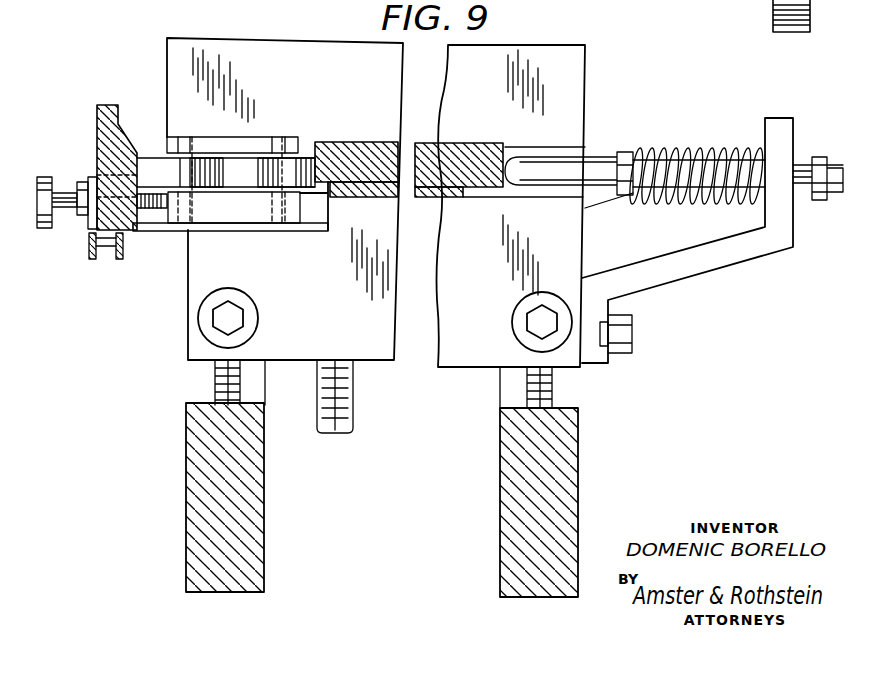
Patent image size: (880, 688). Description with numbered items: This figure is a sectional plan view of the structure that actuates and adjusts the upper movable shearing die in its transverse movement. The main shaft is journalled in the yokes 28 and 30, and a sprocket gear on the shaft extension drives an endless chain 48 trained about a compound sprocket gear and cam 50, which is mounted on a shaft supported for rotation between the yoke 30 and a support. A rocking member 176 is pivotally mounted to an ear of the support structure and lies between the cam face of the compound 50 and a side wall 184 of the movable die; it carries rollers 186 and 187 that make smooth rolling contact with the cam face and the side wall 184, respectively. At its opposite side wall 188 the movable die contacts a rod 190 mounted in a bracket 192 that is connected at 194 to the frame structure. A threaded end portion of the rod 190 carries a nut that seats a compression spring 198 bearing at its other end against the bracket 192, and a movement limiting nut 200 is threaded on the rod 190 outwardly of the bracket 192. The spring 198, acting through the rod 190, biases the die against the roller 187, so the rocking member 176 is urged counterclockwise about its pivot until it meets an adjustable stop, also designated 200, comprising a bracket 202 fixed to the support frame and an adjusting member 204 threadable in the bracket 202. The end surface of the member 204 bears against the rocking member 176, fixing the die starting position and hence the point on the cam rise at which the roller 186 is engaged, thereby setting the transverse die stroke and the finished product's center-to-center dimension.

The yoke 28 is at (580, 462).
The yoke 30 is at (178, 514).
The endless chain 48 is at (97, 253).
The compound sprocket gear and cam 50 is at (100, 147).
The rocking member 176 is at (238, 215).
The side wall 184 is at (316, 146).
The roller 186 is at (205, 160).
The roller 187 is at (272, 163).
The opposite side wall 188 is at (513, 146).
The rod 190 is at (560, 152).
The bracket 192 is at (778, 118).
The connection 194 is at (635, 338).
The compression spring 198 is at (703, 150).
The movement limiting nut / adjustable stop 200 is at (67, 235).
The bracket 202 is at (153, 232).
The adjusting member 204 is at (79, 191).